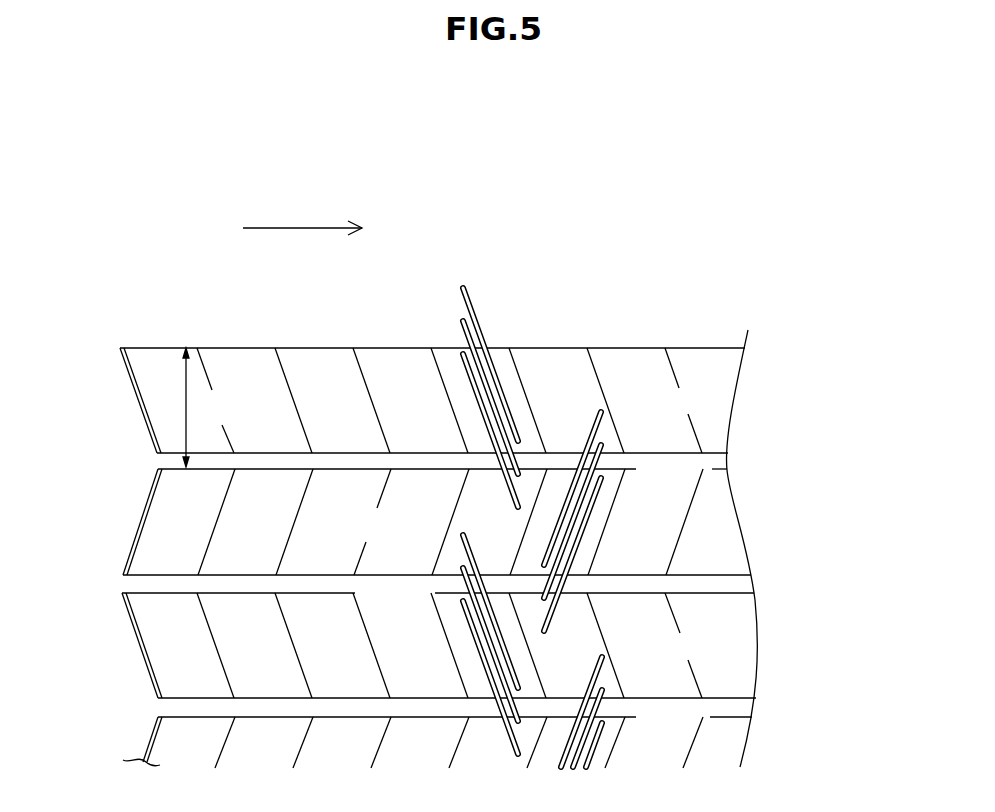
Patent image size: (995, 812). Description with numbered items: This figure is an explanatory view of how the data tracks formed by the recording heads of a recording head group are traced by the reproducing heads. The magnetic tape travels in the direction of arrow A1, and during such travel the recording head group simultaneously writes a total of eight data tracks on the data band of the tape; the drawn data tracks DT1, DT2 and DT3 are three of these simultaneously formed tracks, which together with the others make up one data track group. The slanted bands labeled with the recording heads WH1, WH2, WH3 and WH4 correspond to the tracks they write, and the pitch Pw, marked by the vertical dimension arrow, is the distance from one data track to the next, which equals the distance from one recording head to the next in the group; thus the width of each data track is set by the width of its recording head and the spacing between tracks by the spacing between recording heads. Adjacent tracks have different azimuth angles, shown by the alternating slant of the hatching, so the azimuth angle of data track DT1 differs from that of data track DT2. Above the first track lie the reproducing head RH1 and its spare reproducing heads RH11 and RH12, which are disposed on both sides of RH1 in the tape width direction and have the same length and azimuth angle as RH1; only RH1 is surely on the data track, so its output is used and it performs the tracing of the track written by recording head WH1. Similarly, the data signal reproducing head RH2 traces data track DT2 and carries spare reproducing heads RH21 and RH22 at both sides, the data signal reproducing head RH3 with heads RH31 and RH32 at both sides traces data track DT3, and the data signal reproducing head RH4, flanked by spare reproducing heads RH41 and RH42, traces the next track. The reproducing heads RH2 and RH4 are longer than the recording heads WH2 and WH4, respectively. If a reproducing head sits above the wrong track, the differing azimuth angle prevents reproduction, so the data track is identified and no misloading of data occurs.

The arrow A1 is at (302, 215).
The pitch Pw is at (204, 407).
The recording head WH1 is at (141, 408).
The recording head WH2 is at (141, 525).
The third recording head unit row (print band 3) WH3 is at (141, 656).
The recording head WH4 is at (437, 742).
The data track DT1 is at (717, 392).
The data track DT2 is at (712, 516).
The data track DT3 is at (727, 640).
The spare reproducing head RH11 is at (460, 297).
The reproducing head RH1 is at (460, 330).
The spare reproducing head RH12 is at (460, 363).
The spare reproducing head RH21 is at (606, 422).
The data signal reproducing head RH2 is at (606, 455).
The spare reproducing head RH22 is at (606, 488).
The recording head RH31 is at (460, 545).
The data signal reproducing head RH3 is at (460, 578).
The recording head RH32 is at (460, 610).
The spare reproducing head RH41 is at (606, 668).
The data signal reproducing head RH4 is at (606, 700).
The spare reproducing head RH42 is at (606, 733).